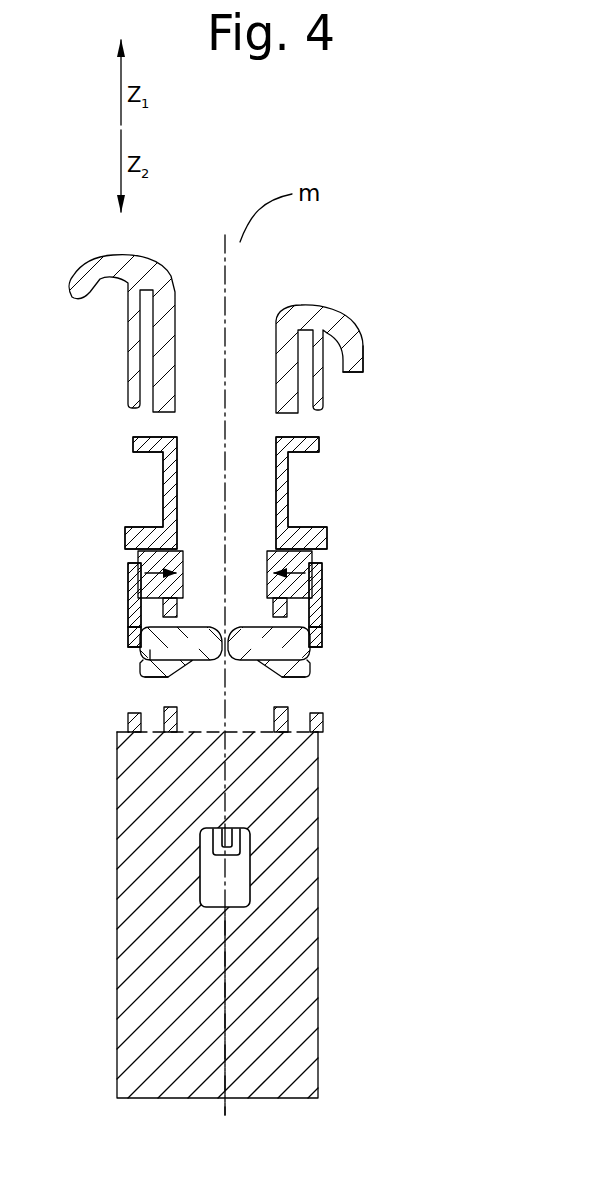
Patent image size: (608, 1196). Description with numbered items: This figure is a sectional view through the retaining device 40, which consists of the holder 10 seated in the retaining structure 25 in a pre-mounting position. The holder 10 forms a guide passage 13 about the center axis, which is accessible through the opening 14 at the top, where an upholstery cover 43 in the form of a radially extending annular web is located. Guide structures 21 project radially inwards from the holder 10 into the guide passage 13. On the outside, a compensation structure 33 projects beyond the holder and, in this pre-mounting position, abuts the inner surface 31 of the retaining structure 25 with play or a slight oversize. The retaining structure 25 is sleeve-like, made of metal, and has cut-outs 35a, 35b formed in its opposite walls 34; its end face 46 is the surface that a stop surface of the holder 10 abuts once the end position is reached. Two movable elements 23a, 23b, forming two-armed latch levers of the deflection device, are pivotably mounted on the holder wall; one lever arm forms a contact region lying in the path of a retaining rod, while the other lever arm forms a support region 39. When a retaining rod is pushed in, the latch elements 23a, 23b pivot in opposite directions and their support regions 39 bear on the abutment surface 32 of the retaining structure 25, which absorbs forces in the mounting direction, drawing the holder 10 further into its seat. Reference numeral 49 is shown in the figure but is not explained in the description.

The holder 10 is at (9, 96).
The guide passage 13 is at (200, 534).
The opening 14 is at (247, 325).
The guide structure 21 is at (132, 577).
The movable element 23a is at (146, 671).
The movable element 23b is at (308, 672).
The retaining structure 25 is at (152, 876).
The inner surface 31 is at (300, 600).
The abutment surface 32 is at (133, 660).
The compensation structure 33 is at (136, 552).
The wall 34 is at (127, 593).
The cut-out 35a is at (130, 708).
The cut-out 35b is at (322, 706).
The support region 39 is at (143, 676).
The retaining device 40 is at (394, 428).
The upholstery cover 43 is at (372, 323).
The end face 46 is at (318, 553).
The latch tip 49 is at (310, 677).